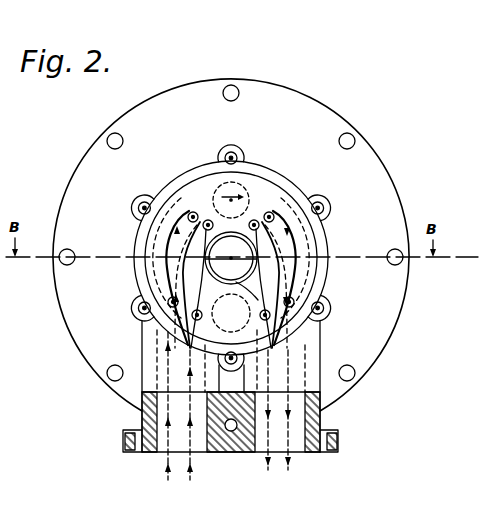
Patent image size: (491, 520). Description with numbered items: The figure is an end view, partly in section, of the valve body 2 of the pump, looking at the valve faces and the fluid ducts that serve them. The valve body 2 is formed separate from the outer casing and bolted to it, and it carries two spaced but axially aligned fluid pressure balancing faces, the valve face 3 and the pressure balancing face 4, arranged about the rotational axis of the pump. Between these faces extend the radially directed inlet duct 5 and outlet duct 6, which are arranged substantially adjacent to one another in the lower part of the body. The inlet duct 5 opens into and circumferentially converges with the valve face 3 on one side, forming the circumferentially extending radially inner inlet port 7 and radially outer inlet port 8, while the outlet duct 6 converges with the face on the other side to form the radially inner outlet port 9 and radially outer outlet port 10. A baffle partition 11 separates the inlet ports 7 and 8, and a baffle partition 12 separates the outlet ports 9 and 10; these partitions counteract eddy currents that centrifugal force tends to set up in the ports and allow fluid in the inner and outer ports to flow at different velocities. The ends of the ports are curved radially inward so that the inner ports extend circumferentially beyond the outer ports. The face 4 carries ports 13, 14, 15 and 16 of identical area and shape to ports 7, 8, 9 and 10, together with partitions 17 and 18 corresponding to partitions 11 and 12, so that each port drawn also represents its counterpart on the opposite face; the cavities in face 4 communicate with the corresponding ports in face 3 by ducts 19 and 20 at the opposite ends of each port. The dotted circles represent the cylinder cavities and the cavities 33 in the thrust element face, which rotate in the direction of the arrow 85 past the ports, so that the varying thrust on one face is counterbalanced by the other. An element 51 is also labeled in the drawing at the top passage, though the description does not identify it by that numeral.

The valve body 2 is at (88, 181).
The valve face 3 is at (291, 197).
The pressure balancing face 4 is at (304, 204).
The inlet fluid duct 5 is at (183, 438).
The outlet fluid duct 6 is at (280, 432).
The radially inner fluid inlet port 7 is at (231, 258).
The radially outer fluid inlet port 8 is at (178, 252).
The radially inner fluid outlet port 9 is at (238, 278).
The radially outer fluid outlet port 10 is at (298, 250).
The baffle partition 11 is at (185, 268).
The baffle partition 12 is at (285, 275).
The port 13 is at (231, 258).
The port 14 is at (178, 252).
The port 15 is at (231, 266).
The port 16 is at (298, 250).
The baffle partition 17 is at (185, 268).
The baffle partition 18 is at (285, 275).
The duct 19 is at (160, 315).
The duct 20 is at (195, 212).
The cavities 33 is at (270, 212).
The flow arrow in top passage 51 is at (224, 190).
The arrow 85 is at (222, 185).